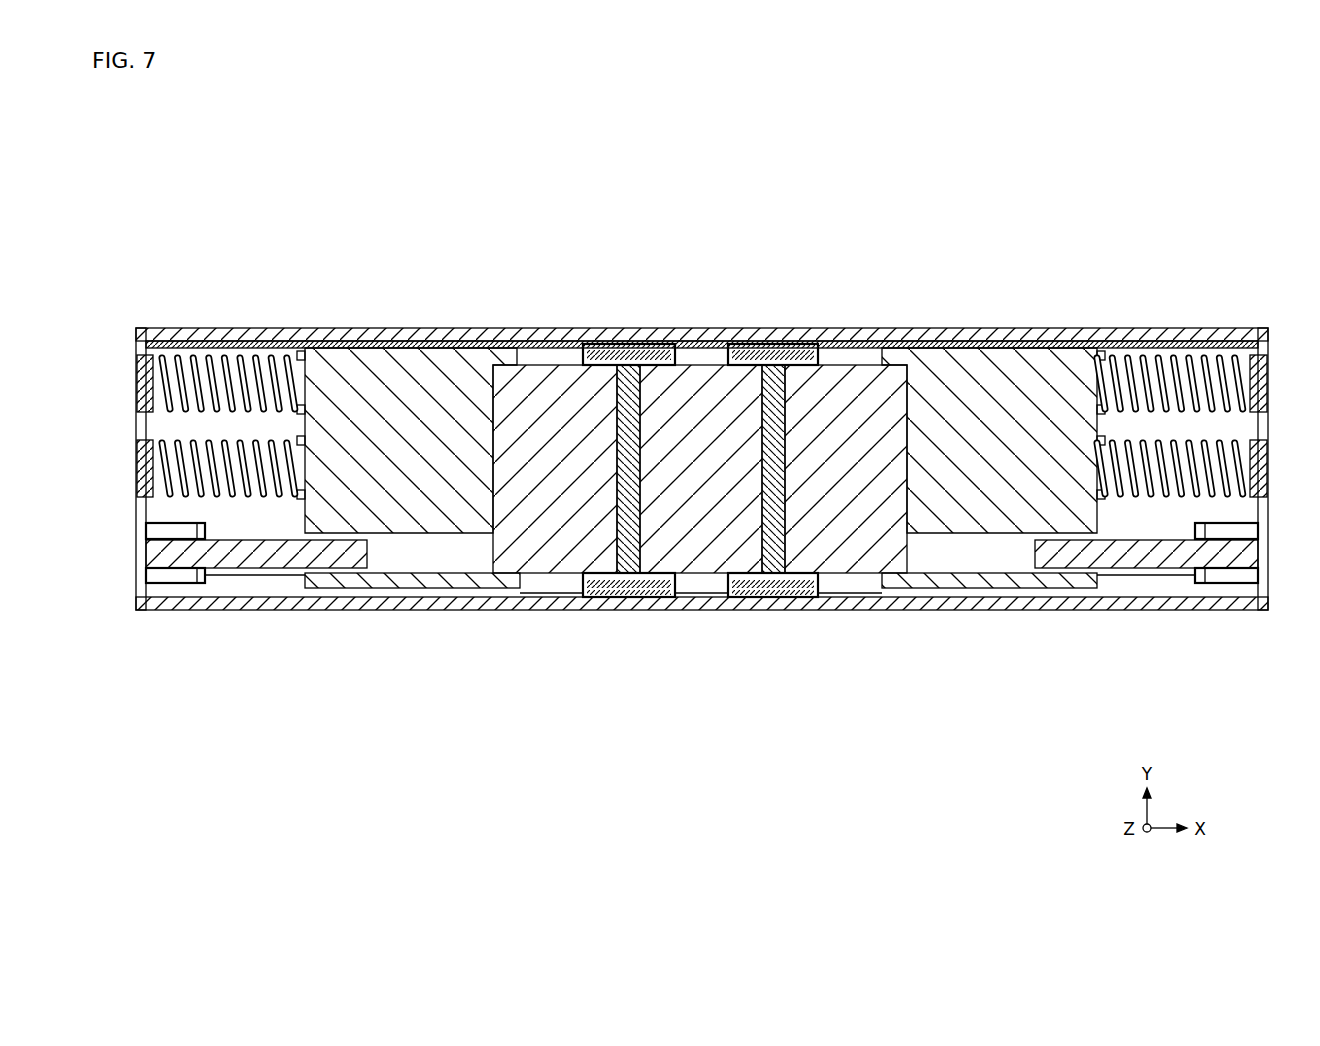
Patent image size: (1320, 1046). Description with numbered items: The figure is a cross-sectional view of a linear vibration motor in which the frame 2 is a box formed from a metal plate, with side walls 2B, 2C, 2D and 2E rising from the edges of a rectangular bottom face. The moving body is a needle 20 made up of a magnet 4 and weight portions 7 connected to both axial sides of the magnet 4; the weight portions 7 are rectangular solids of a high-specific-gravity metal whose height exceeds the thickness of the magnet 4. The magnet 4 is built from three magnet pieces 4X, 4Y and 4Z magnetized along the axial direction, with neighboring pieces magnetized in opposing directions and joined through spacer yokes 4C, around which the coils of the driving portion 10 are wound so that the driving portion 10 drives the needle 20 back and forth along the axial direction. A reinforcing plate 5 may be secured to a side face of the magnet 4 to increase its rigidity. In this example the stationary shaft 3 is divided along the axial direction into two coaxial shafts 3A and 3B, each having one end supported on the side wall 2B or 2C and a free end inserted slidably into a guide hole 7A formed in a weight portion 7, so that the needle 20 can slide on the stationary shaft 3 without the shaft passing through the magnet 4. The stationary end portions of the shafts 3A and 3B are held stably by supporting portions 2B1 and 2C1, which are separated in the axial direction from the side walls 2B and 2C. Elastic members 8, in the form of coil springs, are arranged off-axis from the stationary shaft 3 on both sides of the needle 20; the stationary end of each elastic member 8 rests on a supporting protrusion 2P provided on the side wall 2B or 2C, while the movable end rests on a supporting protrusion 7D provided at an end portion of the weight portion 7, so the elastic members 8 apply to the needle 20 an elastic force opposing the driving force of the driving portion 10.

The frame 2 is at (702, 475).
The side wall 2B is at (138, 331).
The side wall 2C is at (1266, 332).
The side wall 2D is at (868, 610).
The side wall 2E is at (905, 345).
The supporting protrusion 2P is at (161, 355).
The shaft securing portion 2B1 is at (200, 610).
The shaft securing portion 2C1 is at (1192, 610).
The stationary shaft 3 is at (702, 607).
The shaft 3A is at (1118, 610).
The shaft 3B is at (278, 610).
The magnet 4 is at (727, 396).
The magnet piece 4X is at (540, 345).
The magnet piece 4Y is at (708, 345).
The magnet piece 4Z is at (845, 345).
The spacer yoke 4C is at (648, 345).
The reinforcing plate 5 is at (650, 610).
The weight portion 7 is at (702, 462).
The guide hole 7A is at (433, 585).
The supporting protrusion 7D is at (273, 452).
The elastic member 8 is at (183, 527).
The driving portion 10 is at (727, 447).
The needle 20 is at (702, 447).